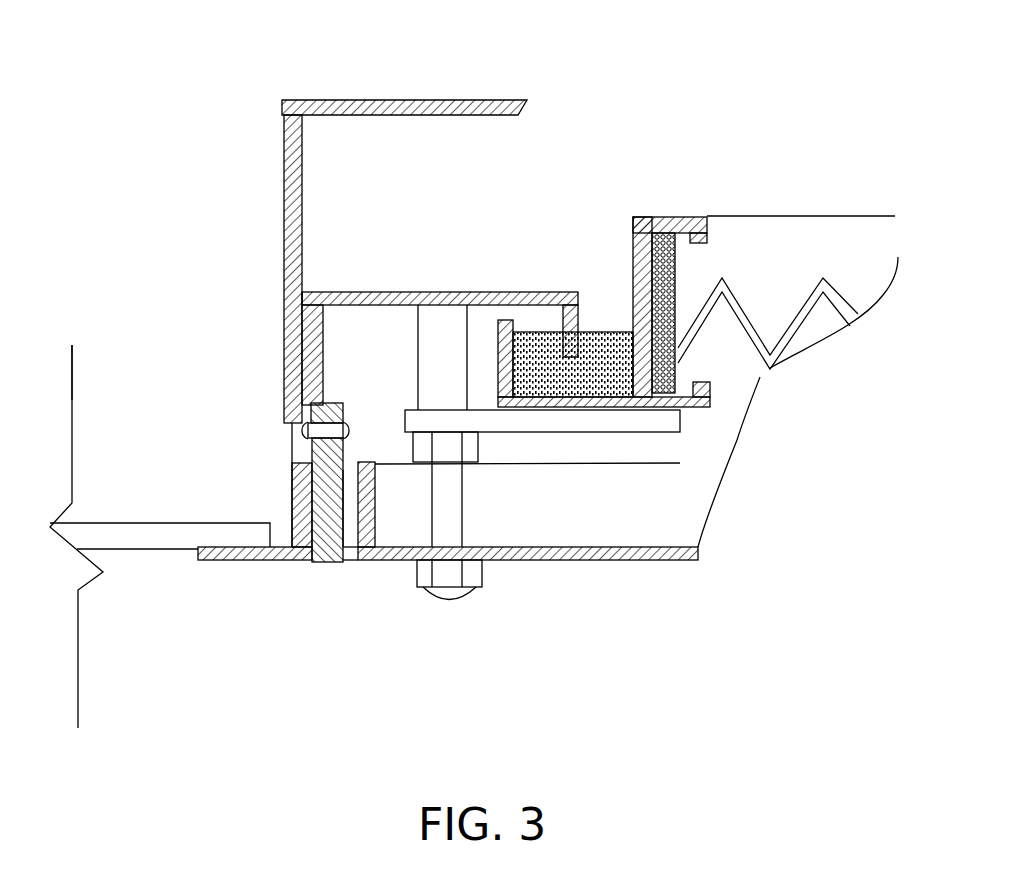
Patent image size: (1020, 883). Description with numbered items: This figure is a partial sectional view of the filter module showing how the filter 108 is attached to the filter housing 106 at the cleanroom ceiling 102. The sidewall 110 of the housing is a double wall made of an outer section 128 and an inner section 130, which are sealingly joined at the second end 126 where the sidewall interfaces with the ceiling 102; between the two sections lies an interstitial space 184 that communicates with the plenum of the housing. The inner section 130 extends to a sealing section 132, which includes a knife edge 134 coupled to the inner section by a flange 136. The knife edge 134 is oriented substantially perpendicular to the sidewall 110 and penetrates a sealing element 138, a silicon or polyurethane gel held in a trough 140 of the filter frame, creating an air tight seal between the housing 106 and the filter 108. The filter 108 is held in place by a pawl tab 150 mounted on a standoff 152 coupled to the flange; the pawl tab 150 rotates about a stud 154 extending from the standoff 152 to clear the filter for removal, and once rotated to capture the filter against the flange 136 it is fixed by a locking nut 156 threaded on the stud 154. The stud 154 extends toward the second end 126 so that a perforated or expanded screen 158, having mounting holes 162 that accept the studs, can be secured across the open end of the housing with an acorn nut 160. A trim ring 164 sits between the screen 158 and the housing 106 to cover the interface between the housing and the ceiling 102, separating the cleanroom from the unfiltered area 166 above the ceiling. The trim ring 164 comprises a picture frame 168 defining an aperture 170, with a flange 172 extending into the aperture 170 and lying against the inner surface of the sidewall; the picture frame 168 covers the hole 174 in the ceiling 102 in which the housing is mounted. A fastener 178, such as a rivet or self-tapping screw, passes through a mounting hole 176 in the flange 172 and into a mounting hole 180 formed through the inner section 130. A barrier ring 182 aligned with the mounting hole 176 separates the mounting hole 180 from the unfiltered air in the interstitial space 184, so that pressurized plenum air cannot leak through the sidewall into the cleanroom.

The cleanroom ceiling 102 is at (160, 549).
The filter housing 106 is at (362, 76).
The filter 108 is at (763, 213).
The sidewall 110 is at (282, 193).
The second end 126 is at (350, 560).
The outer section 128 is at (286, 311).
The inner section 130 is at (380, 292).
The sealing section 132 is at (417, 290).
The knife edge 134 is at (576, 312).
The flange 136 is at (481, 292).
The sealing element 138 is at (710, 382).
The trough 140 is at (677, 364).
The pawl tab 150 is at (550, 432).
The standoff 152 is at (462, 338).
The stud 154 is at (467, 523).
The locking nut 156 is at (497, 468).
The screen 158 is at (650, 558).
The acorn nut 160 is at (463, 594).
The mounting hole 162 is at (465, 537).
The trim ring 164 is at (283, 563).
The unfiltered area 166 is at (130, 428).
The picture frame 168 is at (337, 563).
The aperture 170 is at (362, 560).
The flange 172 is at (343, 515).
The hole 174 is at (280, 511).
The mounting hole 176 is at (286, 362).
The fastener 178 is at (355, 423).
The mounting hole 180 is at (291, 385).
The barrier ring 182 is at (292, 408).
The interstitial space 184 is at (307, 292).